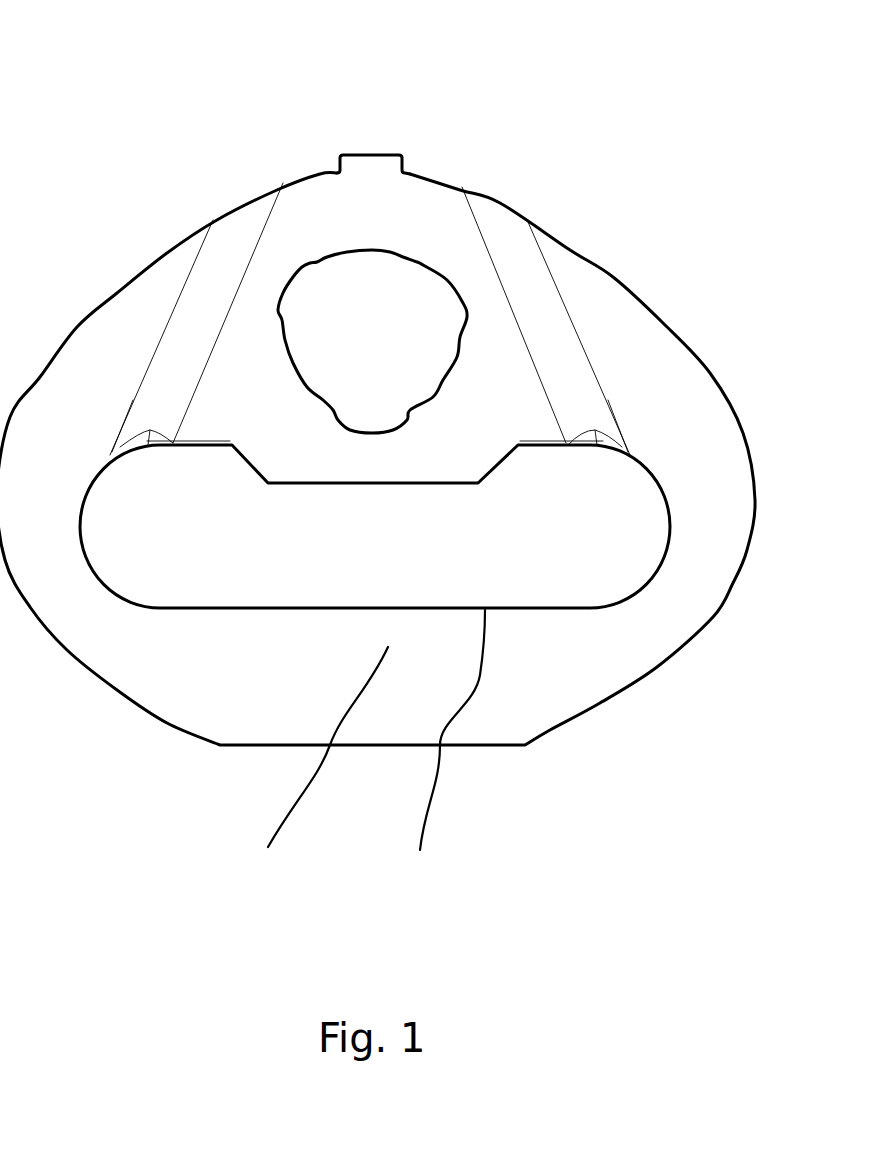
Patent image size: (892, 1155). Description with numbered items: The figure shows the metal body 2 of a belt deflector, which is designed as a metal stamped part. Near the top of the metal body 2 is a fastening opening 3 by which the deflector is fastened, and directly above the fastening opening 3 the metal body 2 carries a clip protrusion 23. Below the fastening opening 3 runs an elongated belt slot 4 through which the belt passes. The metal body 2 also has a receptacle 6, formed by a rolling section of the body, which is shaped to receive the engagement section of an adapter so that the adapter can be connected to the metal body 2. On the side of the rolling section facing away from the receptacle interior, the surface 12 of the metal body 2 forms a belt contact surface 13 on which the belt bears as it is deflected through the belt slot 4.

The metal body 2 is at (185, 75).
The clip protrusion 23 is at (377, 160).
The fastening opening 3 is at (392, 307).
The belt slot 4 is at (577, 525).
The receptacle 6 is at (280, 672).
The surface 12 is at (317, 768).
The belt contact surface 13 is at (441, 757).